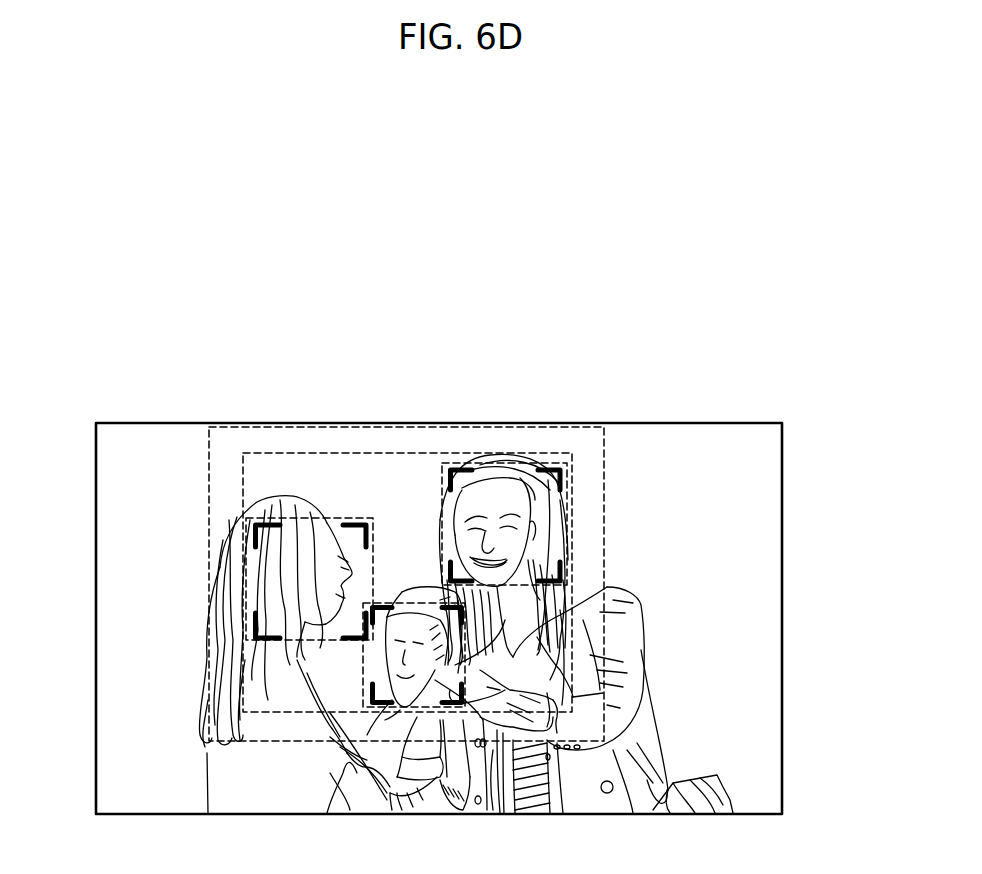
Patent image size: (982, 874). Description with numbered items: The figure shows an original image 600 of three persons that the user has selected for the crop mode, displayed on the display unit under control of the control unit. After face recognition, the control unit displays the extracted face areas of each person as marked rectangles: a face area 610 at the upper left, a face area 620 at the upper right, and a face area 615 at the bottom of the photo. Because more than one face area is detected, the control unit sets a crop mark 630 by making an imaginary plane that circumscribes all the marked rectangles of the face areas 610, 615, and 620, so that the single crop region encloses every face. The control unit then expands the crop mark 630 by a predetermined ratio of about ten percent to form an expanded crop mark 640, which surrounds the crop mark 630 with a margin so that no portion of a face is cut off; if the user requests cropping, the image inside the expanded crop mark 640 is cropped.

The original image 600 is at (783, 620).
The face area 610 is at (352, 518).
The face area 615 is at (368, 690).
The face area 620 is at (570, 477).
The crop mark 630 is at (405, 451).
The expanded crop mark 640 is at (604, 528).